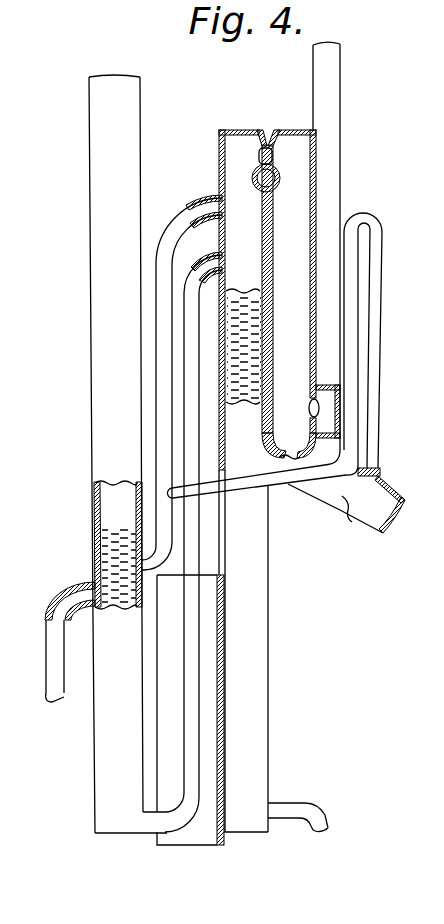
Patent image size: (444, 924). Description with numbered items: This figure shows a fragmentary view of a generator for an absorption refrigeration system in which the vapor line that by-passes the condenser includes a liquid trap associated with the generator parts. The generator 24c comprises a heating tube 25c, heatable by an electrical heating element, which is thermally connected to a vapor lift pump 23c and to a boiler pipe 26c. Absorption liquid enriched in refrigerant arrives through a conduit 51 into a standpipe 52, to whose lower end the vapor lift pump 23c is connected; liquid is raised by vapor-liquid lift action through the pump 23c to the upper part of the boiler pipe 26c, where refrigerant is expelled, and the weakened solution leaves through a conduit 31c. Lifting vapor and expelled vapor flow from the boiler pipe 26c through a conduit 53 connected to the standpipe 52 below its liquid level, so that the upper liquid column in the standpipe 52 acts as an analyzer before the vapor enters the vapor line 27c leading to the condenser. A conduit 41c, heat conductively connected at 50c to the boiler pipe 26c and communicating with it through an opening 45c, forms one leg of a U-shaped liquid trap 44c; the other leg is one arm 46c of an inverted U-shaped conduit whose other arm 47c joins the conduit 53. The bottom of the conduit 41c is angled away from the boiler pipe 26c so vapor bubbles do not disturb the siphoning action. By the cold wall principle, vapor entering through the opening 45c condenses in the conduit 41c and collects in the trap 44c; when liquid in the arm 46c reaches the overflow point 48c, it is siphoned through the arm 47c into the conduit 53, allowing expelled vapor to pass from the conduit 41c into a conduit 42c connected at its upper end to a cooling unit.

The vapor line 27c is at (104, 250).
The standpipe 52 is at (108, 758).
The conduit 51 is at (45, 703).
The conduit 53 is at (184, 212).
The vapor lift pump 23c is at (198, 731).
The conduit 41c is at (316, 172).
The heat conductive connection 50c is at (273, 218).
The opening 45c is at (273, 156).
The overflow point 48c is at (370, 212).
The U-shaped liquid trap 44c is at (345, 297).
The arm of inverted U-shaped conduit 46c is at (381, 302).
The arm of inverted U-shaped conduit 47c is at (346, 349).
The conduit 42c is at (339, 418).
The generator 24c is at (277, 596).
The boiler pipe 26c is at (262, 647).
The heating tube 25c is at (203, 835).
The conduit 31c is at (311, 832).